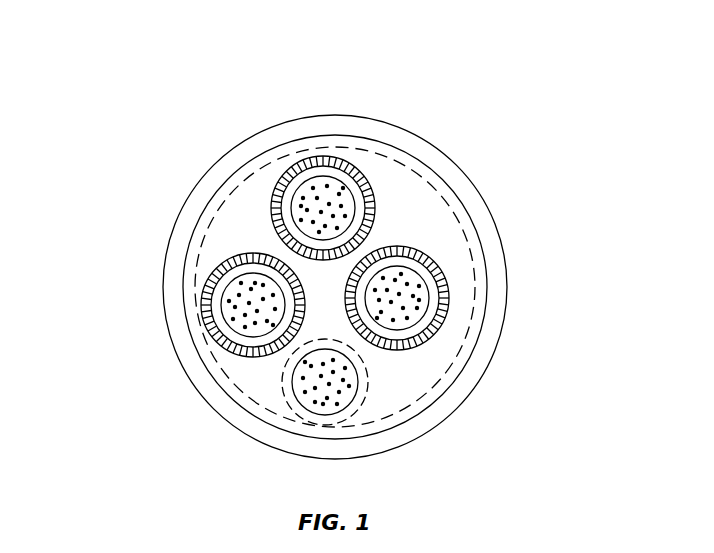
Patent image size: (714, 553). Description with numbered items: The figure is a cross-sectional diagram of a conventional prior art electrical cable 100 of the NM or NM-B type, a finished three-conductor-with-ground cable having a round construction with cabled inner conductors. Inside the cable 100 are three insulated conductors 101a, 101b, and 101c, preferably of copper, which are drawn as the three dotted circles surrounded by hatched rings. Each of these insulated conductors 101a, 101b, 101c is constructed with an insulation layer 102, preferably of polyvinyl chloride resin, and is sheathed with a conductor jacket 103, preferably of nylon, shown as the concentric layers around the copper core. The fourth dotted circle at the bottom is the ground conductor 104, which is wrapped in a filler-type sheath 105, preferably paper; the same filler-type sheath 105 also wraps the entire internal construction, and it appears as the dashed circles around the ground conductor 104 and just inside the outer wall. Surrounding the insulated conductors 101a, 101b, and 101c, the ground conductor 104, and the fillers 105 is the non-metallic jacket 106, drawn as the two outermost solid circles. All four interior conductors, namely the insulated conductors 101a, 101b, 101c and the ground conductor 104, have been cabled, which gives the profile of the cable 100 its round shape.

The electrical cable 100 is at (139, 55).
The insulated conductor 101a is at (313, 197).
The insulated conductor 101b is at (461, 278).
The insulated conductor 101c is at (242, 303).
The insulation layer 102 is at (415, 265).
The conductor jacket 103 is at (450, 303).
The ground conductor 104 is at (340, 390).
The filler-type sheath 105 is at (210, 357).
The non-metallic jacket 106 is at (334, 127).